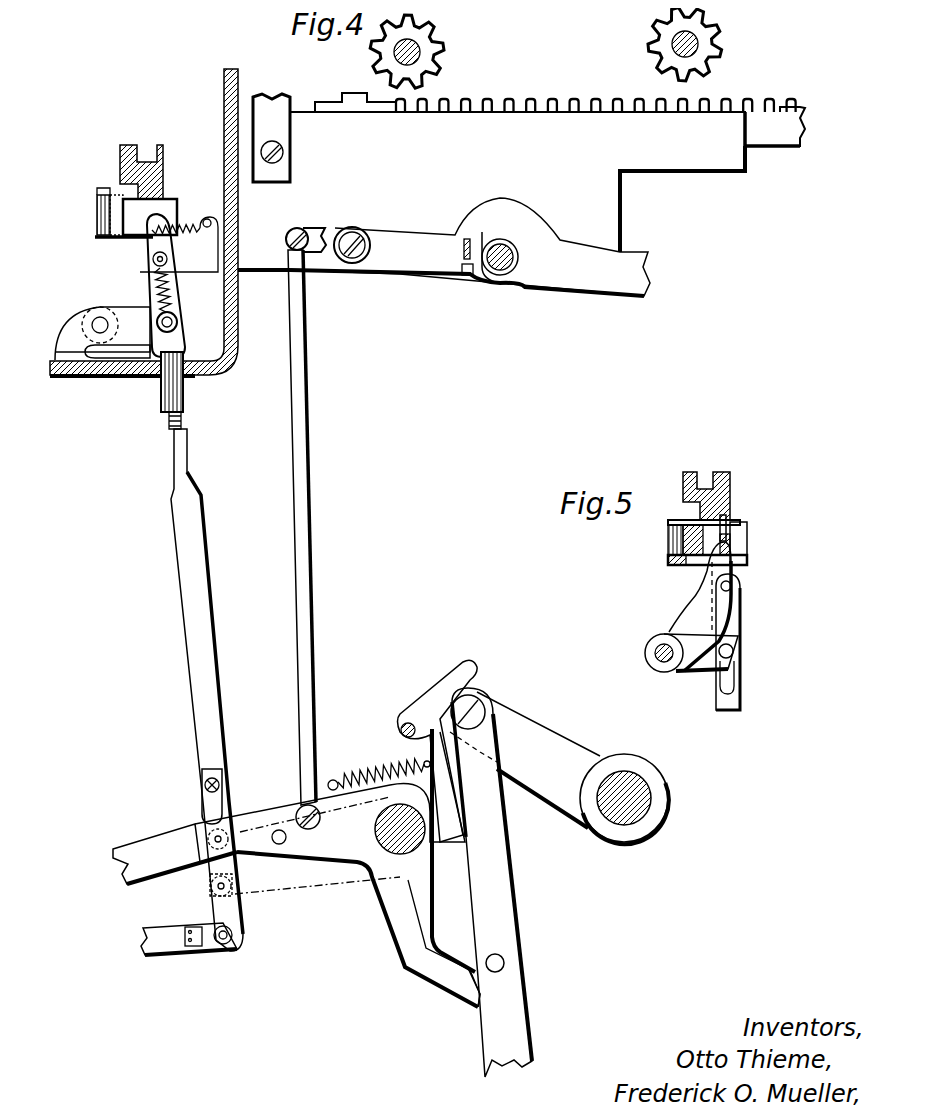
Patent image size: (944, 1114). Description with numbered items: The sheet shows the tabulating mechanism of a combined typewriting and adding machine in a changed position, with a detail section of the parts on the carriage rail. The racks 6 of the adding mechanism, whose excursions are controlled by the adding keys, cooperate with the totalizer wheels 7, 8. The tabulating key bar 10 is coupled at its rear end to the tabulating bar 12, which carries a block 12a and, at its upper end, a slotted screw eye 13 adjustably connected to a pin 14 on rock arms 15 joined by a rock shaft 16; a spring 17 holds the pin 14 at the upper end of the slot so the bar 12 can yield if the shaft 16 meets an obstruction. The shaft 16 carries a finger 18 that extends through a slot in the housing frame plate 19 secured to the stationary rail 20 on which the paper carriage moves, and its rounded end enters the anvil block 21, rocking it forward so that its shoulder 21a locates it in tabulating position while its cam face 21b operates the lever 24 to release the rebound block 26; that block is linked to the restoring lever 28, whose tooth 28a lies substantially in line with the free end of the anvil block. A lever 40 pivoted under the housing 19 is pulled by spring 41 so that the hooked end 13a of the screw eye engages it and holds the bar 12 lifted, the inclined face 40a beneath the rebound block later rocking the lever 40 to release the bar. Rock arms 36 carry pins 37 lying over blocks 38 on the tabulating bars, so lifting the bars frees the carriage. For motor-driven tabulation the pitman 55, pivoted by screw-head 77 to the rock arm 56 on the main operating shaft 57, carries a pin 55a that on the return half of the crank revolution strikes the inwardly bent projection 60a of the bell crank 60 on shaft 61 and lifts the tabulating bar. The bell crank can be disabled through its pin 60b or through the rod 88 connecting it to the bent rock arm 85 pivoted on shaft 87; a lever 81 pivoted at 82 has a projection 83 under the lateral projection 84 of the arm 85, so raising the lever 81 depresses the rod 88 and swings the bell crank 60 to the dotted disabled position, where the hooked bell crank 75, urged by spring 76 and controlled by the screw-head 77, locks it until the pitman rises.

In FIG. 4, the racks 6 is at (545, 96).
In FIG. 4, the totalizer wheel 7 is at (440, 40).
In FIG. 4, the totalizer wheel 8 is at (650, 33).
In FIG. 4, the tabulating key bar 10 is at (175, 950).
In FIG. 4, the tabulating bar 12 is at (185, 628).
In FIG. 4, the block 12a is at (213, 812).
In FIG. 4, the screw eye 13 is at (186, 392).
In FIG. 5, the screw eye 13 is at (745, 700).
In FIG. 4, the hooked upper end 13a is at (152, 257).
In FIG. 4, the pin 14 is at (178, 320).
In FIG. 5, the pin 14 is at (734, 649).
In FIG. 4, the rock arms 15 is at (137, 333).
In FIG. 5, the rock arms 15 is at (695, 663).
In FIG. 4, the rock shaft 16 is at (100, 315).
In FIG. 5, the rock shaft 16 is at (656, 656).
In FIG. 4, the spring 17 is at (156, 292).
In FIG. 5, the finger 18 is at (700, 610).
In FIG. 4, the housing frame plate 19 is at (150, 217).
In FIG. 5, the housing frame plate 19 is at (672, 558).
In FIG. 4, the stationary rail 20 is at (160, 170).
In FIG. 5, the stationary rail 20 is at (728, 475).
In FIG. 5, the anvil block 21 is at (672, 530).
In FIG. 5, the shoulder 21a is at (730, 538).
In FIG. 5, the cam face 21b is at (744, 526).
In FIG. 5, the lever 24 is at (726, 533).
In FIG. 4, the rebound block 26 is at (95, 200).
In FIG. 4, the restoring lever 28 is at (117, 193).
In FIG. 5, the restoring lever 28 is at (678, 518).
In FIG. 4, the tooth 28a is at (97, 195).
In FIG. 4, the rock arms 36 is at (127, 855).
In FIG. 4, the pins 37 is at (205, 833).
In FIG. 4, the blocks 38 is at (214, 866).
In FIG. 4, the lever 40 is at (112, 238).
In FIG. 4, the inclined face 40a is at (97, 222).
In FIG. 4, the spring 41 is at (192, 222).
In FIG. 4, the pitman 55 is at (512, 903).
In FIG. 4, the pin 55a is at (505, 960).
In FIG. 4, the rock arm 56 is at (545, 740).
In FIG. 4, the main operating shaft 57 is at (651, 795).
In FIG. 4, the bell crank 60 is at (338, 850).
In FIG. 4, the projection 60a is at (482, 1000).
In FIG. 4, the pin 60b is at (279, 828).
In FIG. 4, the shaft 61 is at (393, 835).
In FIG. 4, the hooked bell crank lever 75 is at (423, 712).
In FIG. 4, the spring 76 is at (368, 775).
In FIG. 4, the screw-head 77 is at (478, 706).
In FIG. 4, the lever 81 is at (572, 255).
In FIG. 4, the pivot 82 is at (356, 238).
In FIG. 4, the projection 83 is at (467, 272).
In FIG. 4, the lateral projection 84 is at (465, 245).
In FIG. 4, the lever 85 is at (318, 230).
In FIG. 4, the shaft 87 is at (505, 262).
In FIG. 4, the rod 88 is at (308, 548).